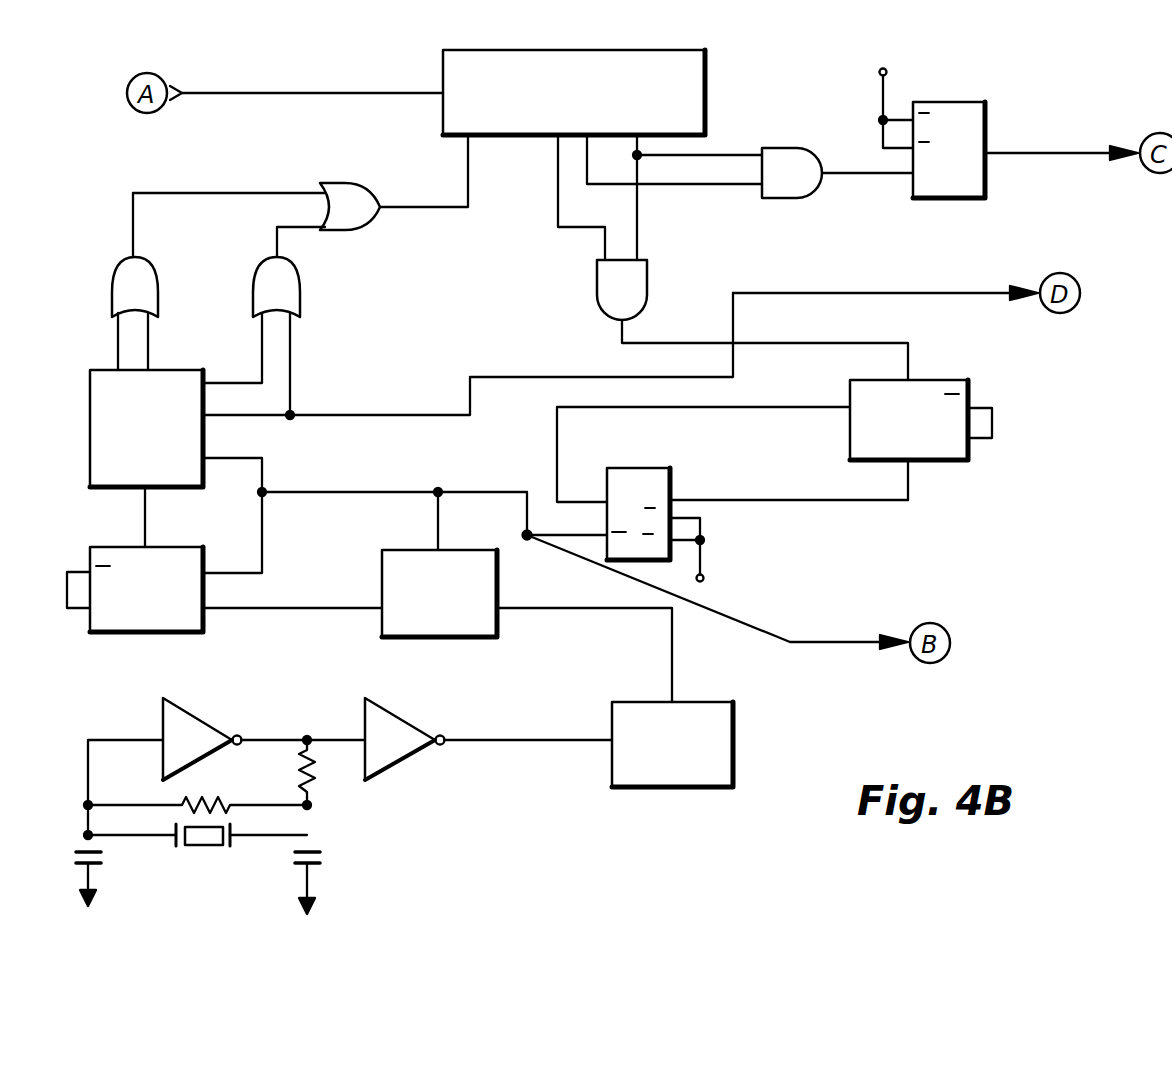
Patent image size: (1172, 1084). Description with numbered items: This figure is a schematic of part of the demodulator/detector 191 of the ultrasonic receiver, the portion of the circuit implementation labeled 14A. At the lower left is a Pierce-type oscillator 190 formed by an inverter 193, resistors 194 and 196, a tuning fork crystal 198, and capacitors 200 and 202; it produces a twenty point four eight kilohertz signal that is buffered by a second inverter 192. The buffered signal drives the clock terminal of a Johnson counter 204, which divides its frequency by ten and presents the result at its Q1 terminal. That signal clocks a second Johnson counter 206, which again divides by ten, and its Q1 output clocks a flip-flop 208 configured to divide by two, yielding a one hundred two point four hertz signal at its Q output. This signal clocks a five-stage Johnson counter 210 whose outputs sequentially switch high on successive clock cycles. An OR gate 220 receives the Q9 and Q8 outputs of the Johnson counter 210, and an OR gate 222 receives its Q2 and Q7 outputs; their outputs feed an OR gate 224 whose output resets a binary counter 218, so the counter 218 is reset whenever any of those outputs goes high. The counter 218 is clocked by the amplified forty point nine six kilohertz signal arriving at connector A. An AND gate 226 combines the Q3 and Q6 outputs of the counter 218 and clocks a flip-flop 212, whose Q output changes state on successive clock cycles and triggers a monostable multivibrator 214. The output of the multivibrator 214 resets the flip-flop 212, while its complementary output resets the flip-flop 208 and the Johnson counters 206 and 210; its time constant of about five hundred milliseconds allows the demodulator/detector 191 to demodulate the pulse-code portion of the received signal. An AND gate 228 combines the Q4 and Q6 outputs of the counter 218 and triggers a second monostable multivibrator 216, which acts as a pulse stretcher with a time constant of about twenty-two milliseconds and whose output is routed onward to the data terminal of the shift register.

The control circuit portion 14A is at (955, 694).
The Pierce-type oscillator 190 is at (342, 793).
The demodulator/detector 191 is at (905, 583).
The inverter 192 is at (400, 715).
The inverter 193 is at (198, 712).
The resistor 194 is at (218, 798).
The resistor 196 is at (315, 775).
The tuning fork crystal 198 is at (205, 848).
The capacitor 200 is at (100, 870).
The capacitor 202 is at (318, 870).
The Johnson counter 204 is at (660, 790).
The Johnson counter 206 is at (468, 640).
The flip-flop 208 is at (135, 634).
The Johnson counter 210 is at (88, 412).
The flip-flop 212 is at (940, 380).
The monostable multivibrator 214 is at (673, 476).
The monostable multivibrator 216 is at (988, 108).
The binary counter 218 is at (708, 94).
The OR gate 220 is at (156, 272).
The OR gate 222 is at (300, 294).
The OR gate 224 is at (372, 220).
The AND gate 226 is at (648, 274).
The AND gate 228 is at (815, 192).